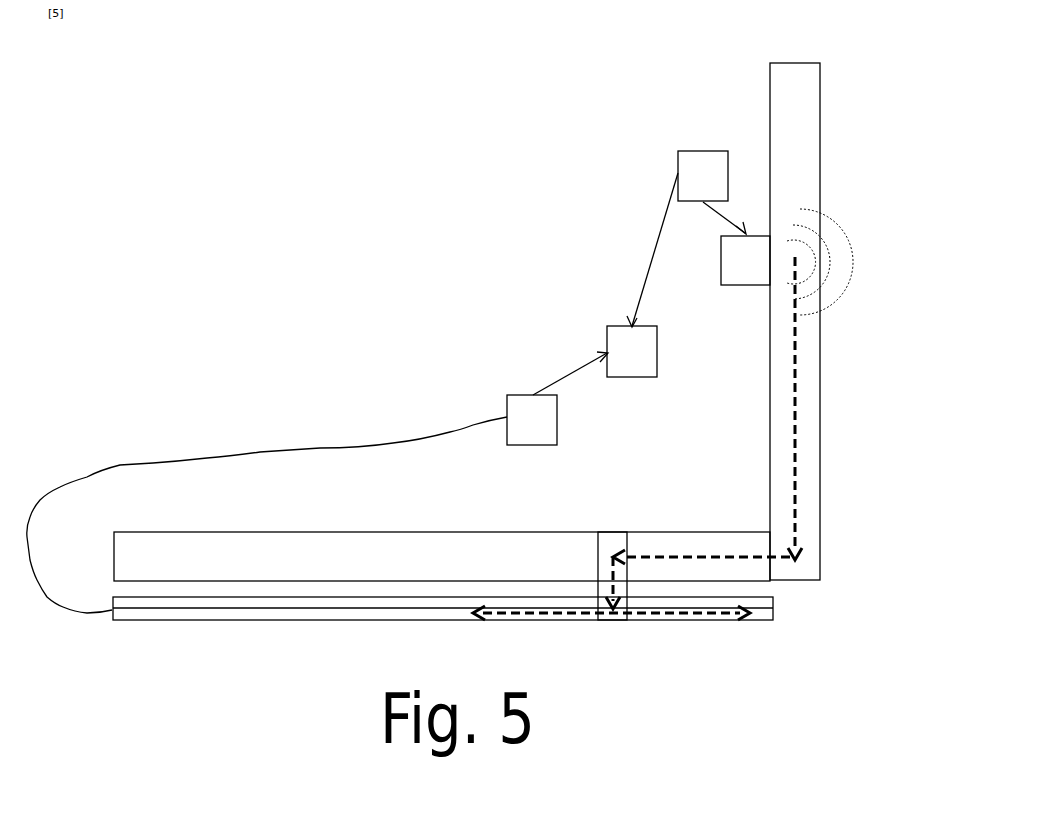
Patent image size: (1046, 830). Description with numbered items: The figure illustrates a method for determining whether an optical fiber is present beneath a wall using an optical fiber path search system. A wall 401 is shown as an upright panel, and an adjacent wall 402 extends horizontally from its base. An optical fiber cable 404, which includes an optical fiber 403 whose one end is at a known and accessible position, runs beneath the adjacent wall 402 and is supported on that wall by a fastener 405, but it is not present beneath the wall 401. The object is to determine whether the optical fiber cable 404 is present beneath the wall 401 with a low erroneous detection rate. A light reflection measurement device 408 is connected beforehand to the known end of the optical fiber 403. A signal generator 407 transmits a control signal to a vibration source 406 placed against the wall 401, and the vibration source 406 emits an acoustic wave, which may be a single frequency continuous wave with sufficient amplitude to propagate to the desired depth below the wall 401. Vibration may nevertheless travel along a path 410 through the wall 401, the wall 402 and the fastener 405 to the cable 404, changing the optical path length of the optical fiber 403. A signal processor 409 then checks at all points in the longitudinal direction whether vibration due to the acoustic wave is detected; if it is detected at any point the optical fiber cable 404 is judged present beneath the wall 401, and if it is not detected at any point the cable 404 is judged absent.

The wall 401 is at (790, 73).
The wall 402 is at (147, 545).
The optical fiber 403 is at (260, 452).
The optical fiber cable 404 is at (217, 620).
The fastener 405 is at (615, 540).
The vibration source 406 is at (732, 262).
The signal generator 407 is at (698, 162).
The light reflection measurement device 408 is at (530, 415).
The signal processor 409 is at (630, 352).
The path 410 is at (798, 423).